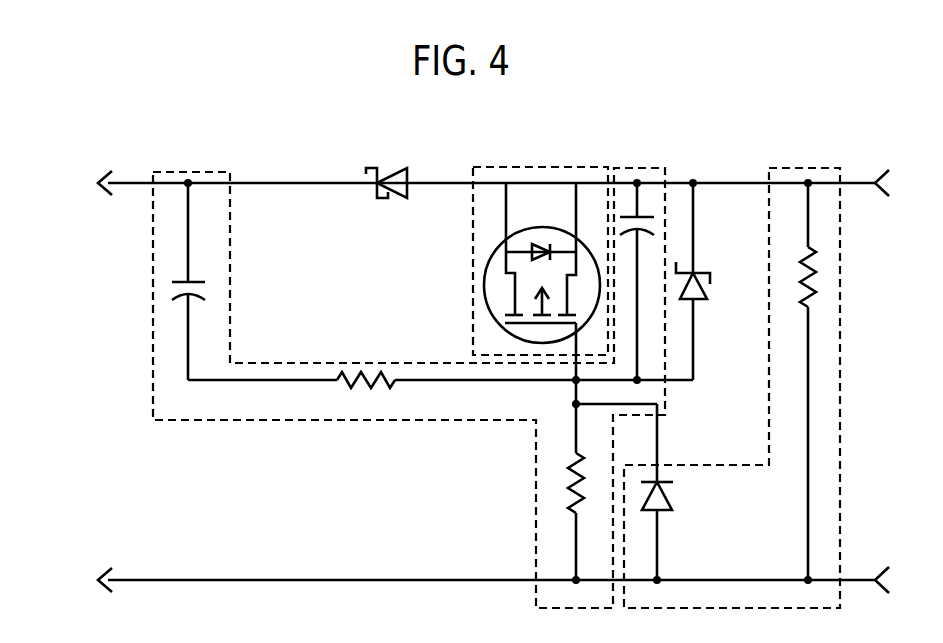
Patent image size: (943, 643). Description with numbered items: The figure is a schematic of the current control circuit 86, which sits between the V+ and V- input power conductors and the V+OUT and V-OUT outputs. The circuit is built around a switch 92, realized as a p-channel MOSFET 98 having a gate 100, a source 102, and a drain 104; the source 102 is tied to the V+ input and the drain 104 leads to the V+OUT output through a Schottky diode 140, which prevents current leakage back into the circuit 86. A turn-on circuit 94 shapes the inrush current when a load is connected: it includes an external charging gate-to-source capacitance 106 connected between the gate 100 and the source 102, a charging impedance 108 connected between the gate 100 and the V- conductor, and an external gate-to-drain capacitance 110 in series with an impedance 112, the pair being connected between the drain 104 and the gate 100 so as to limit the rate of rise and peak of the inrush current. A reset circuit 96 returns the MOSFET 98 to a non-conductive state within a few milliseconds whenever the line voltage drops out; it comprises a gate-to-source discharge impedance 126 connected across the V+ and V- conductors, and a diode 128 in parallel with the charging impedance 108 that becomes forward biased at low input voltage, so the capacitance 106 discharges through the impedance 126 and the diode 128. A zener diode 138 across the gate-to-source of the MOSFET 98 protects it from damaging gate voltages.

The current control circuit 86 is at (287, 84).
The turn-on circuit 94 is at (190, 172).
The gate-to-drain capacitance 110 is at (184, 292).
The impedance 112 is at (357, 388).
The Schottky diode 140 is at (386, 167).
The switch 92 is at (510, 167).
The p-channel MOSFET 98 is at (540, 226).
The drain 104 is at (506, 198).
The source 102 is at (578, 193).
The gate 100 is at (573, 347).
The charging impedance 108 is at (568, 490).
The charging capacitance 106 is at (652, 215).
The zener diode 138 is at (706, 290).
The reset circuit 96 is at (808, 167).
The discharge impedance 126 is at (812, 279).
The diode 128 is at (673, 495).